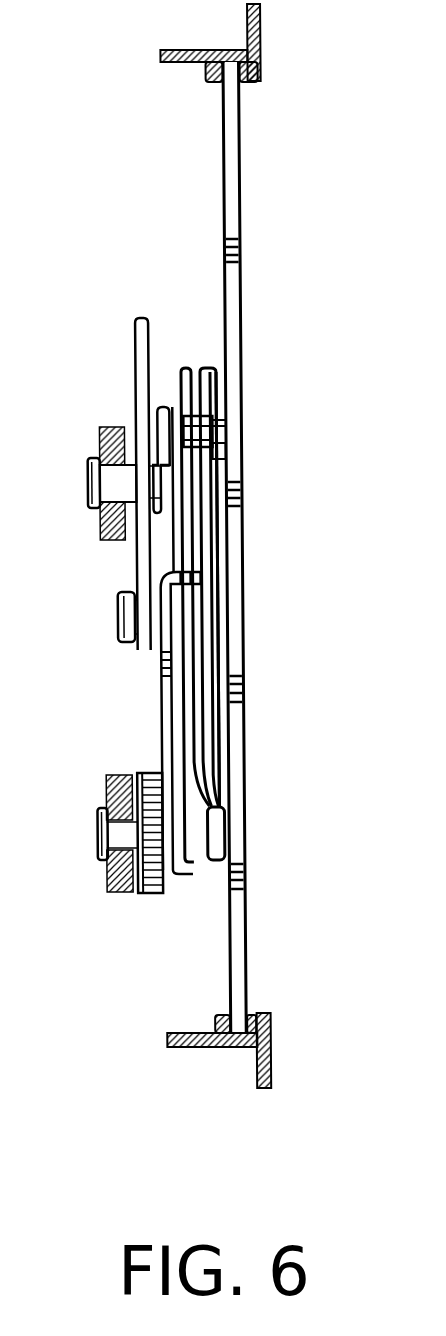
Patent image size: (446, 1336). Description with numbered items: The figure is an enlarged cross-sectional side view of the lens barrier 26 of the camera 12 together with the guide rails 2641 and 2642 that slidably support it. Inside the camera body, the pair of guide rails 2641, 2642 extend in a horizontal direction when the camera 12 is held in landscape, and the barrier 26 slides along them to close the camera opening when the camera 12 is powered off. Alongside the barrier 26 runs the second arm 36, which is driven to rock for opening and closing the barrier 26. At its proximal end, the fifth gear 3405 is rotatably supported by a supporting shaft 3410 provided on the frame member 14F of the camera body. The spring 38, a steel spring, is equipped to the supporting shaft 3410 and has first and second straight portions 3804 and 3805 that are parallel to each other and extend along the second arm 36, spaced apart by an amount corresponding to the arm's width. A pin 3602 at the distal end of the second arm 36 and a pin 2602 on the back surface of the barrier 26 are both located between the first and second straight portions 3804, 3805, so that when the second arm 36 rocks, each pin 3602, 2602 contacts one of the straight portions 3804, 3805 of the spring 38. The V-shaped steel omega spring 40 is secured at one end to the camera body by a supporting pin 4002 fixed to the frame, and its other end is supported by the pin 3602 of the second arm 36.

The camera 12 is at (263, 46).
The barrier 26 is at (232, 308).
The guide rail 2641 is at (200, 50).
The guide rail 2642 is at (202, 1047).
The pin 2602 is at (215, 432).
The omega spring 40 is at (138, 354).
The supporting pin 4002 is at (100, 450).
The frame member 14F is at (100, 526).
The second straight portion 3805 is at (183, 368).
The first straight portion 3804 is at (202, 368).
The spring 38 is at (212, 642).
The pin 3602 is at (118, 619).
The second arm 36 is at (158, 712).
The supporting shaft 3410 is at (222, 833).
The fifth gear 3405 is at (150, 895).